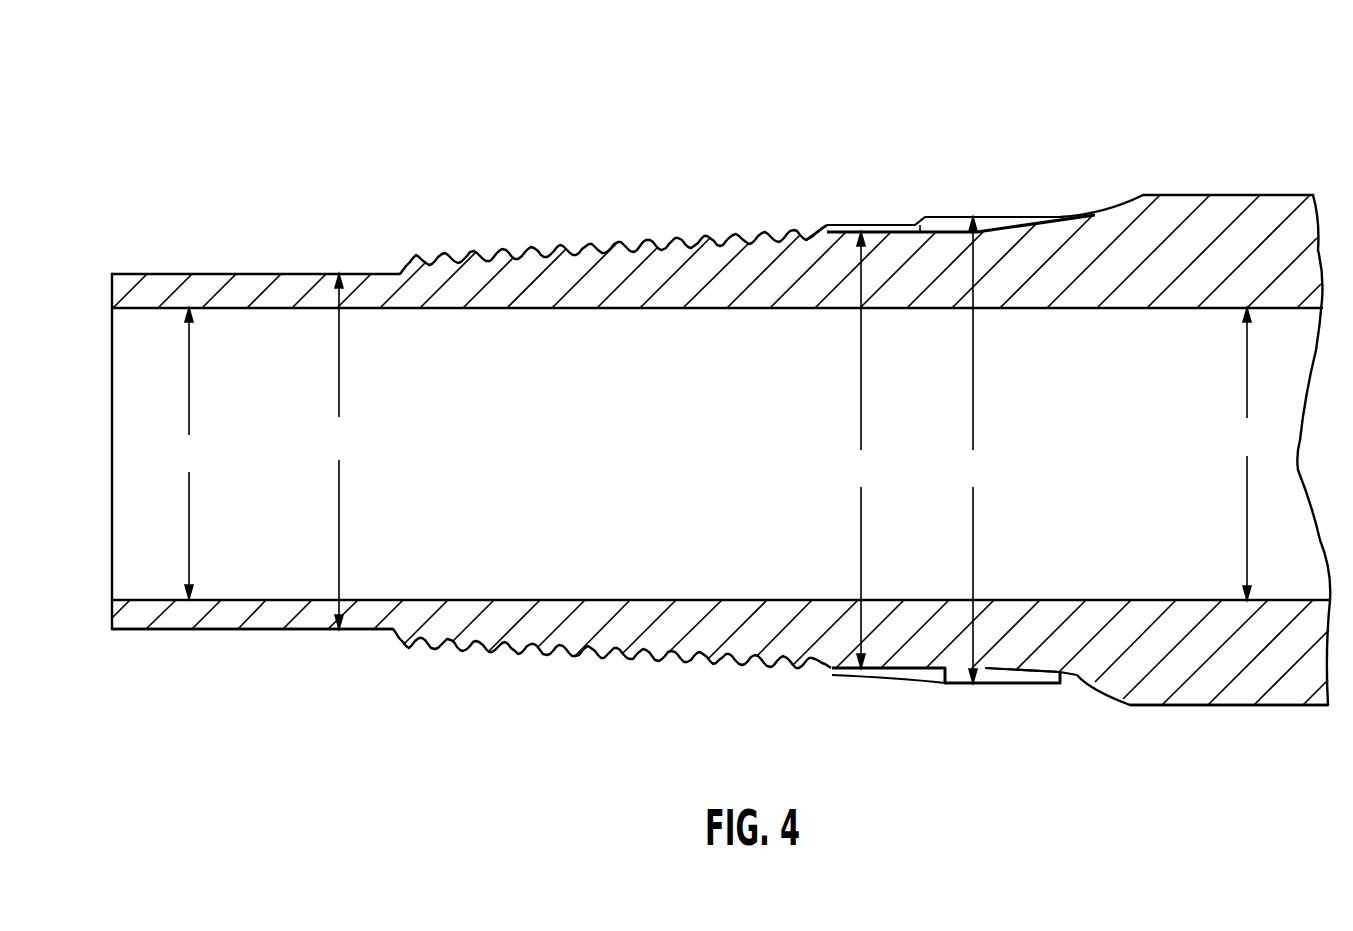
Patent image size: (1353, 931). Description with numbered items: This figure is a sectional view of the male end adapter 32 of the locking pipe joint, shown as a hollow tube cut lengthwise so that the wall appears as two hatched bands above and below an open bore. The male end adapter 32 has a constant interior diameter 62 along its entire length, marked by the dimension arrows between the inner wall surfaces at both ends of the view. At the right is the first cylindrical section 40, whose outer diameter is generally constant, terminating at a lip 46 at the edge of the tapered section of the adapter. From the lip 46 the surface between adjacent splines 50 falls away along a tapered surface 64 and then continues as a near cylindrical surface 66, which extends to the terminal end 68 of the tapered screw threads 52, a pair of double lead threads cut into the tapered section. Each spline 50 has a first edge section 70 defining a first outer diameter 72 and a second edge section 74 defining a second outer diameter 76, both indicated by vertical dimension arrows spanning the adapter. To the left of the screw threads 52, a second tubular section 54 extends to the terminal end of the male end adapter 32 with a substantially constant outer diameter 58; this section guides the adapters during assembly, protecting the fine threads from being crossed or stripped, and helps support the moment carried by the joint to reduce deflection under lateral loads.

The male end adapter 32 is at (380, 140).
The first cylindrical section 40 is at (1240, 195).
The lip 46 is at (1128, 705).
The splines 50 is at (1013, 227).
The tapered screw threads 52 is at (628, 245).
The second tubular section 54 is at (253, 632).
The outer diameter 58 is at (339, 451).
The interior diameter 62 is at (718, 454).
The tapered surface 64 is at (1125, 209).
The near cylindrical surface 66 is at (943, 230).
The terminal end of the screw threads 68 is at (828, 228).
The first edge section 70 is at (933, 213).
The first outer diameter 72 is at (972, 450).
The second edge section 74 is at (845, 227).
The second outer diameter 76 is at (860, 450).